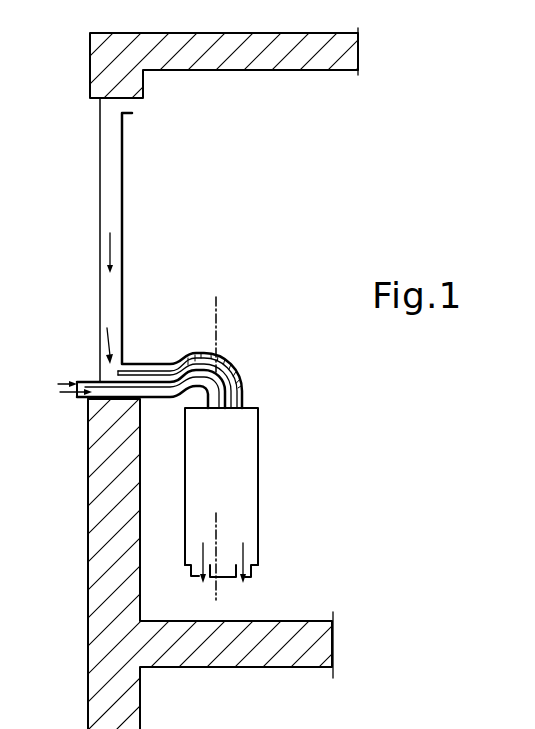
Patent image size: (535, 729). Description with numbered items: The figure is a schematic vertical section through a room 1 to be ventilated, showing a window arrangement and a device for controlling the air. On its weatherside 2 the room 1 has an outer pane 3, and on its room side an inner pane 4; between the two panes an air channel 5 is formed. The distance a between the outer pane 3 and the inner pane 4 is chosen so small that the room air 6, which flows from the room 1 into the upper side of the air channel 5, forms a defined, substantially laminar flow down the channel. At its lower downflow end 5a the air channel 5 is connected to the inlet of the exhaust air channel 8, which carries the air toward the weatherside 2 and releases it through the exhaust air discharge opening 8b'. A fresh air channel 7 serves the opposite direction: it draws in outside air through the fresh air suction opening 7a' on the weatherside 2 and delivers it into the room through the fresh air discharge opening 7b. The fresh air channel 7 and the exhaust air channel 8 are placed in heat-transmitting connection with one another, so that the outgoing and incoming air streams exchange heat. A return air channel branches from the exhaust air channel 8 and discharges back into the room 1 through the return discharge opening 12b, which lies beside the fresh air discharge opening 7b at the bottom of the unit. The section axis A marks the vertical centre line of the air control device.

The room 1 is at (226, 221).
The weatherside 2 is at (44, 221).
The outer pane 3 is at (100, 253).
The inner pane 4 is at (122, 247).
The air channel 5 is at (101, 340).
The downflow end 5a is at (128, 367).
The room air 6 is at (110, 135).
The fresh air channel 7 is at (164, 398).
The fresh air suction opening 7a' is at (60, 417).
The fresh air discharge opening 7b is at (192, 576).
The exhaust air channel 8 is at (160, 383).
The exhaust air discharge opening 8b' is at (48, 364).
The return discharge opening 12b is at (261, 576).
The distance a is at (72, 190).
The section axis A is at (216, 446).